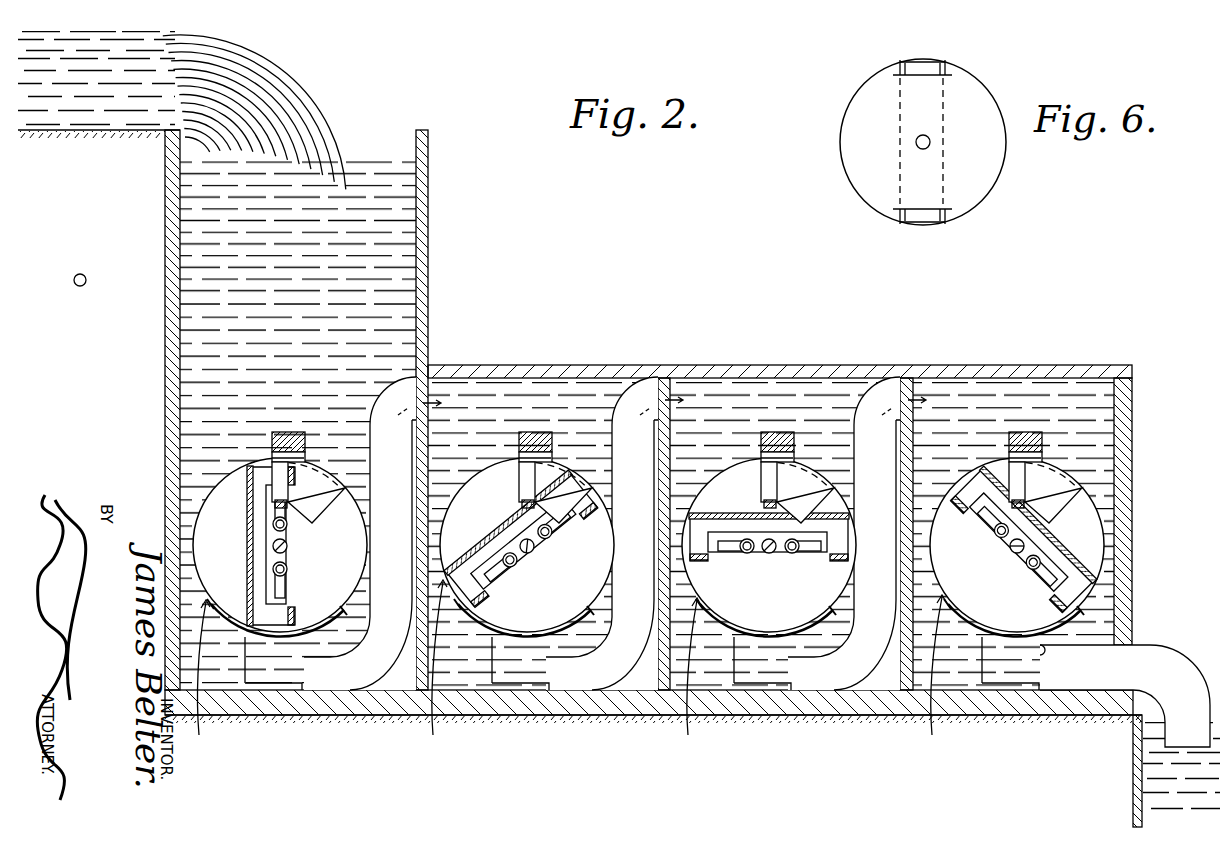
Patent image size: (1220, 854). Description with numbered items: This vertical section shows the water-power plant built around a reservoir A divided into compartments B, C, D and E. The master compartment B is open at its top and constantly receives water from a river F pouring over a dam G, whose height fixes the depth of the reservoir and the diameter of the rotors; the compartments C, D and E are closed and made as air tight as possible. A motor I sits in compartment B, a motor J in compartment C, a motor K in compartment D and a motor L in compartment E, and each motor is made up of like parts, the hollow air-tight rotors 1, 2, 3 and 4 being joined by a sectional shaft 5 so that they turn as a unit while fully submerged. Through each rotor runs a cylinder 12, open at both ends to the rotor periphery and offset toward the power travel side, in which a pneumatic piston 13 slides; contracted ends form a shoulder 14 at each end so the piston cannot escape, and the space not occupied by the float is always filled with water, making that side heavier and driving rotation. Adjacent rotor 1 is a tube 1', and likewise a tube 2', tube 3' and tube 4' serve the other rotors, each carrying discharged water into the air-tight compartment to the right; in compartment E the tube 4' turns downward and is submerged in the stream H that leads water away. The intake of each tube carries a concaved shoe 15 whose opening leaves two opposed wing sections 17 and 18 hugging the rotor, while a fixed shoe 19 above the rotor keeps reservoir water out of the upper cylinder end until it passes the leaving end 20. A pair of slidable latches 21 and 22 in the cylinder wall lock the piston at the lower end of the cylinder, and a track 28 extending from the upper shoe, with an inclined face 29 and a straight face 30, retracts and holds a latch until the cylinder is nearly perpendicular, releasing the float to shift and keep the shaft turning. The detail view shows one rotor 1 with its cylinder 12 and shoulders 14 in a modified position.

In FIG. 2, the rotor 1 is at (280, 545).
In FIG. 6, the rotor 1 is at (909, 142).
In FIG. 2, the tube 1' is at (360, 533).
In FIG. 2, the rotor 2 is at (527, 545).
In FIG. 2, the tube 2' is at (602, 533).
In FIG. 2, the rotor 3 is at (769, 545).
In FIG. 2, the tube 3' is at (844, 533).
In FIG. 2, the rotor 4 is at (1017, 545).
In FIG. 2, the tube 4' is at (1125, 696).
In FIG. 2, the sectional shaft 5 is at (288, 550).
In FIG. 2, the cylinder 12 is at (252, 493).
In FIG. 6, the cylinder 12 is at (893, 71).
In FIG. 2, the pneumatic piston 13 is at (264, 565).
In FIG. 6, the shoulder 14 is at (948, 70).
In FIG. 2, the concaved shoe 15 is at (282, 635).
In FIG. 2, the wing section 17 is at (220, 616).
In FIG. 2, the wing section 18 is at (330, 621).
In FIG. 2, the fixed shoe 19 is at (317, 478).
In FIG. 2, the leaving end 20 is at (272, 458).
In FIG. 2, the latch 21 is at (274, 521).
In FIG. 2, the latch 22 is at (288, 583).
In FIG. 2, the track 28 is at (307, 517).
In FIG. 2, the inclined face 29 is at (685, 500).
In FIG. 2, the straight face 30 is at (290, 500).
In FIG. 2, the reservoir A is at (455, 365).
In FIG. 2, the master compartment B is at (410, 277).
In FIG. 2, the compartment C is at (576, 375).
In FIG. 2, the compartment D is at (794, 375).
In FIG. 2, the compartment E is at (1043, 375).
In FIG. 2, the river F is at (65, 113).
In FIG. 2, the dam G is at (104, 226).
In FIG. 2, the stream H is at (1152, 777).
In FIG. 2, the motor I is at (198, 681).
In FIG. 2, the motor J is at (433, 671).
In FIG. 2, the motor K is at (689, 680).
In FIG. 2, the motor L is at (935, 678).